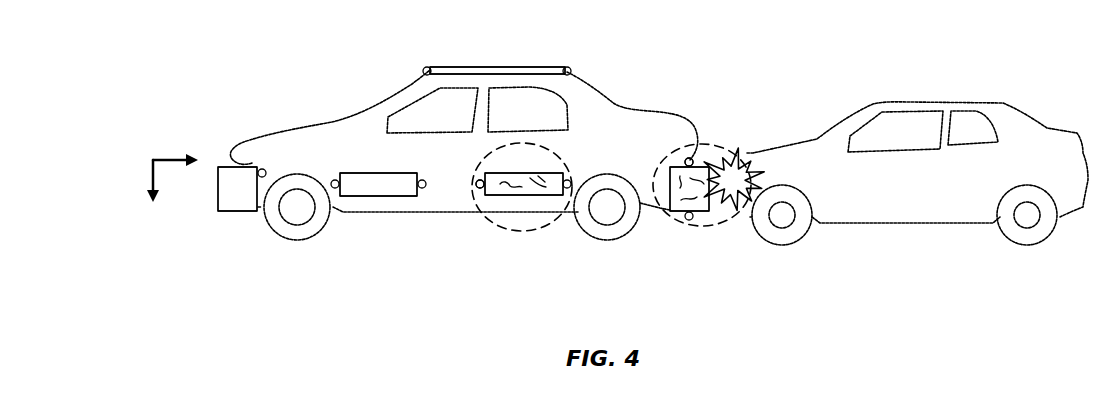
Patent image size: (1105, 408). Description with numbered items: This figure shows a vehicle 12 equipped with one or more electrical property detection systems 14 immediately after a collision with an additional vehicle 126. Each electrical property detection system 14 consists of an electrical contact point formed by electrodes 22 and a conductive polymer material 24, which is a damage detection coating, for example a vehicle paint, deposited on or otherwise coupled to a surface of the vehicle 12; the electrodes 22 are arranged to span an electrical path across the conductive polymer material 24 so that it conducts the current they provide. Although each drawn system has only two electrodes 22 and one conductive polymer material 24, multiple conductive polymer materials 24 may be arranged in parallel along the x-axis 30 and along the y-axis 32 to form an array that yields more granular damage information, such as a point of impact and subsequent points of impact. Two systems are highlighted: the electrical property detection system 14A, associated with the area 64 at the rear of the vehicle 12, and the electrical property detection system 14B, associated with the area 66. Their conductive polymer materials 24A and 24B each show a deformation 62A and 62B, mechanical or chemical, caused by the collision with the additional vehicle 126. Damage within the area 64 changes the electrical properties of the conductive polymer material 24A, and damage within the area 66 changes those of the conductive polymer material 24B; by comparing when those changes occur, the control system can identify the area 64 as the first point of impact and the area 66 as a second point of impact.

The vehicle 12 is at (328, 52).
The electrical property detection system 14 is at (200, 195).
The electrical property detection system 14A is at (675, 227).
The electrical property detection system 14B is at (517, 208).
The electrode 22 is at (430, 66).
The conductive polymer material 24 is at (500, 67).
The conductive polymer material 24A is at (692, 158).
The conductive polymer material 24B is at (527, 173).
The x-axis 30 is at (167, 158).
The y-axis 32 is at (153, 171).
The deformation 62A is at (702, 212).
The deformation 62B is at (543, 198).
The area 64 is at (722, 225).
The area 66 is at (472, 184).
The additional vehicle 126 is at (938, 102).